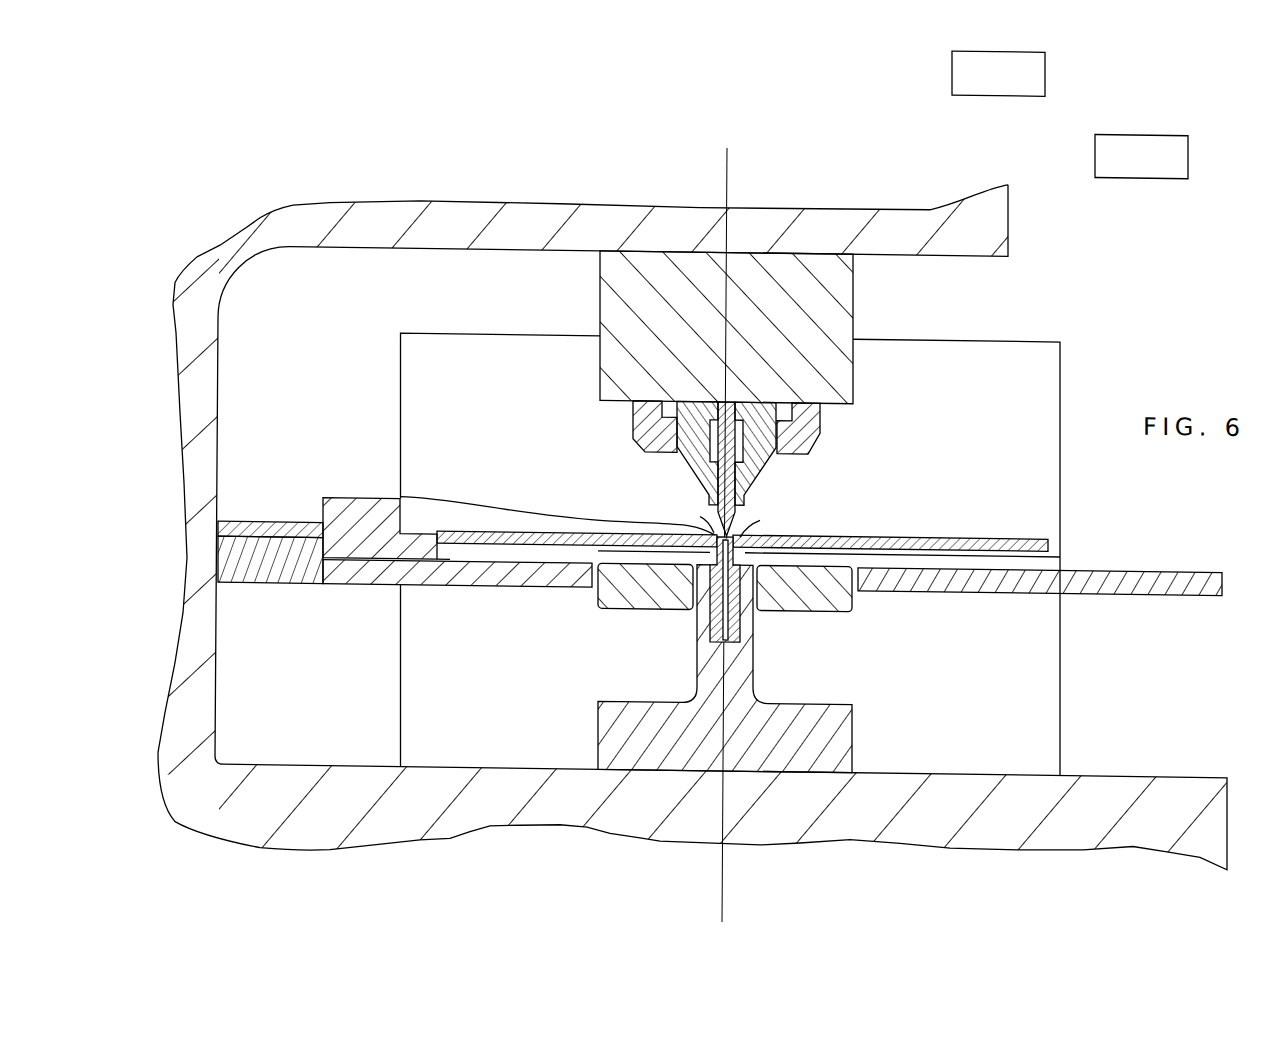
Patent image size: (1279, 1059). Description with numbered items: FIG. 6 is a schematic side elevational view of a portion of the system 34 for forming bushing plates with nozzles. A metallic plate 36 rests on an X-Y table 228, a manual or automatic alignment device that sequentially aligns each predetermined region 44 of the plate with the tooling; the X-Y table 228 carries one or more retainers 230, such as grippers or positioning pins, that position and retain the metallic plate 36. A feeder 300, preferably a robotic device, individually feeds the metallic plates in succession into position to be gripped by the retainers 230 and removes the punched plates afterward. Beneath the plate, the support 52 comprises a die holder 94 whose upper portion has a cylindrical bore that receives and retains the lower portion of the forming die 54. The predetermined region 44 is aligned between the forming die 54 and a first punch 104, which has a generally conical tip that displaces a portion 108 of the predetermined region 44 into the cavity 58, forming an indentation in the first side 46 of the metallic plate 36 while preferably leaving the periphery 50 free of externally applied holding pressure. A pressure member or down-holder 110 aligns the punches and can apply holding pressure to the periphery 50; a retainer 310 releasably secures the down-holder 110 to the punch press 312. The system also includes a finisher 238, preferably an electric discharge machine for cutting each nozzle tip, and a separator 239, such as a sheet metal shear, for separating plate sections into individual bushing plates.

The system 34 is at (1025, 316).
The metallic plate 36 is at (1045, 541).
The predetermined region 44 is at (740, 537).
The first side 46 is at (945, 537).
The periphery 50 is at (400, 499).
The support 52 is at (693, 650).
The forming die 54 is at (740, 625).
The cavity 58 is at (1067, 553).
The die holder 94 is at (855, 743).
The first punch 104 is at (690, 474).
The portion 108 is at (715, 535).
The down-holder 110 is at (760, 494).
The X-Y table 228 is at (1168, 770).
The retainer 230 is at (323, 502).
The finisher 238 is at (1190, 152).
The separator 239 is at (1047, 71).
The feeder 300 is at (1065, 350).
The retainer 310 is at (822, 439).
The punch press 312 is at (855, 326).